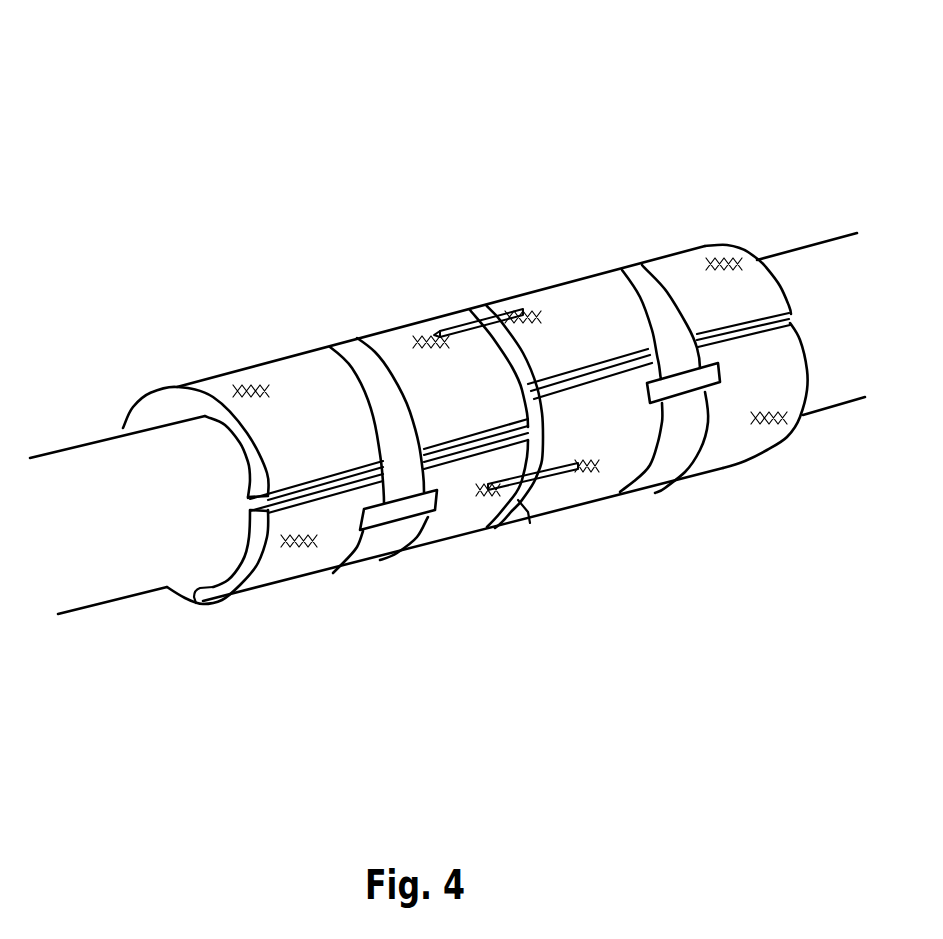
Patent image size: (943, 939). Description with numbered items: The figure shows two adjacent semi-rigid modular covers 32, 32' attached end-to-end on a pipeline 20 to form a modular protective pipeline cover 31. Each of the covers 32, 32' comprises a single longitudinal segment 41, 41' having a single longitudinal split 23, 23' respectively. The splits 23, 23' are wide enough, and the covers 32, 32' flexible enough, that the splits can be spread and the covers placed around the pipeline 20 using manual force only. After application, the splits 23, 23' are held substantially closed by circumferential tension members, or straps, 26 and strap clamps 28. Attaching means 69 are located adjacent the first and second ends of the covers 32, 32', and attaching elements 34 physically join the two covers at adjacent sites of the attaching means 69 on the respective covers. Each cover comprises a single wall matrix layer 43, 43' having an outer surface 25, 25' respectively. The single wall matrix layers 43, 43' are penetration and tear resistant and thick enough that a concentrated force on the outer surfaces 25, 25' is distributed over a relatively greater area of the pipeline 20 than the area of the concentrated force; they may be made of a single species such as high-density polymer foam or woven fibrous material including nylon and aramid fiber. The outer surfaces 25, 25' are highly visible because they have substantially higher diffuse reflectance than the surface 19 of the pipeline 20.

The surface of pipeline 19 is at (90, 468).
The pipeline 20 is at (85, 612).
The longitudinal split 23 is at (353, 466).
The longitudinal split 23' is at (703, 353).
The outer surface 25 is at (274, 571).
The outer surface 25' is at (717, 439).
The circumferential tension member (strap) 26 is at (317, 357).
The strap clamp 28 is at (425, 513).
The modular protective pipeline cover 31 is at (556, 92).
The semi-rigid modular cover 32 is at (363, 386).
The semi-rigid modular cover 32' is at (569, 329).
The attaching element 34 is at (495, 322).
The longitudinal segment 41 is at (379, 412).
The longitudinal segment 41' is at (645, 334).
The single wall matrix layer 43 is at (182, 618).
The single wall matrix layer 43' is at (539, 547).
The attaching means 69 is at (235, 387).